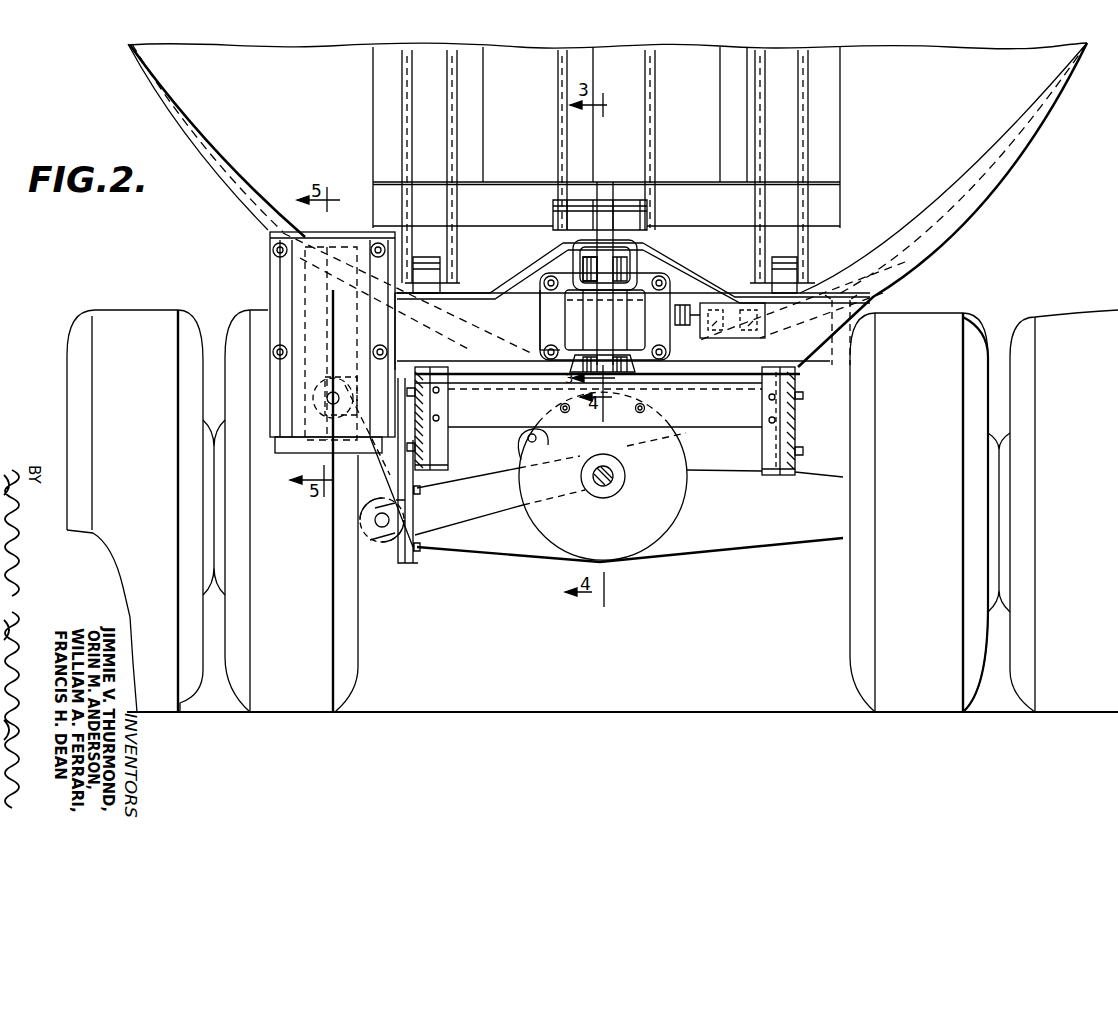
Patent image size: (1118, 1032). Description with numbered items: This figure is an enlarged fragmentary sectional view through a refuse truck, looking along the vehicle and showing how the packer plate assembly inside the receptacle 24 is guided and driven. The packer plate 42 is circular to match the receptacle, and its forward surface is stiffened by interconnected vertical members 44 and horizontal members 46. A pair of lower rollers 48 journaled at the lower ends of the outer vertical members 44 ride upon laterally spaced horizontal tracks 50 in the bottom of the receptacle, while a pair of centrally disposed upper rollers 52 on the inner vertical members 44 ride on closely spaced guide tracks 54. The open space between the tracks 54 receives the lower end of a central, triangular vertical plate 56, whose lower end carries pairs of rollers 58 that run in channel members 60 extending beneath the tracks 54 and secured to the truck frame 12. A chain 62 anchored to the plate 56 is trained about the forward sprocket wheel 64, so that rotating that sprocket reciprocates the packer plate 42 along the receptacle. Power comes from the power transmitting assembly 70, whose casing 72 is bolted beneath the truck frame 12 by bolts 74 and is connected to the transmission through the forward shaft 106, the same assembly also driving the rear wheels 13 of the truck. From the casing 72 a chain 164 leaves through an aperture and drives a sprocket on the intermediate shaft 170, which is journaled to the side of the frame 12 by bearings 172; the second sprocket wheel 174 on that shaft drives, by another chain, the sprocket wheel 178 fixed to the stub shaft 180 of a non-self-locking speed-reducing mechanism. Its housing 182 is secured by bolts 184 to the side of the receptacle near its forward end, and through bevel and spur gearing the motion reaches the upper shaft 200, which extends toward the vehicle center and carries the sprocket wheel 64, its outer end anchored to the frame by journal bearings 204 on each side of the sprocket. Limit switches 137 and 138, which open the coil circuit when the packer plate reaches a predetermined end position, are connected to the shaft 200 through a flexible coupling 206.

The truck frame 12 is at (437, 448).
The rear wheels 13 is at (333, 642).
The receptacle 24 is at (1063, 90).
The packer plate 42 is at (965, 148).
The vertical members 44 is at (843, 200).
The horizontal members 46 is at (487, 222).
The lower rollers 48 is at (430, 270).
The horizontal tracks 50 is at (427, 293).
The upper rollers 52 is at (570, 213).
The guide tracks 54 is at (655, 246).
The vertical plate 56 is at (610, 198).
The rollers 58 is at (623, 257).
The channel members 60 is at (550, 246).
The chain 62 is at (588, 265).
The forward sprocket wheel 64 is at (603, 327).
The power transmitting assembly 70 is at (672, 538).
The casing 72 is at (676, 500).
The bolts 74 is at (560, 408).
The forward shaft 106 is at (613, 473).
The switch 137 is at (700, 328).
The switch 138 is at (770, 340).
The chain 164 is at (478, 518).
The intermediate shaft 170 is at (378, 523).
The bearings 172 is at (415, 537).
The second sprocket wheel 174 is at (365, 533).
The sprocket wheel 178 is at (331, 343).
The stub shaft 180 is at (325, 395).
The housing 182 is at (296, 267).
The bolts 184 is at (378, 243).
The upper shaft 200 is at (500, 326).
The journal bearings 204 is at (560, 313).
The flexible coupling 206 is at (690, 300).